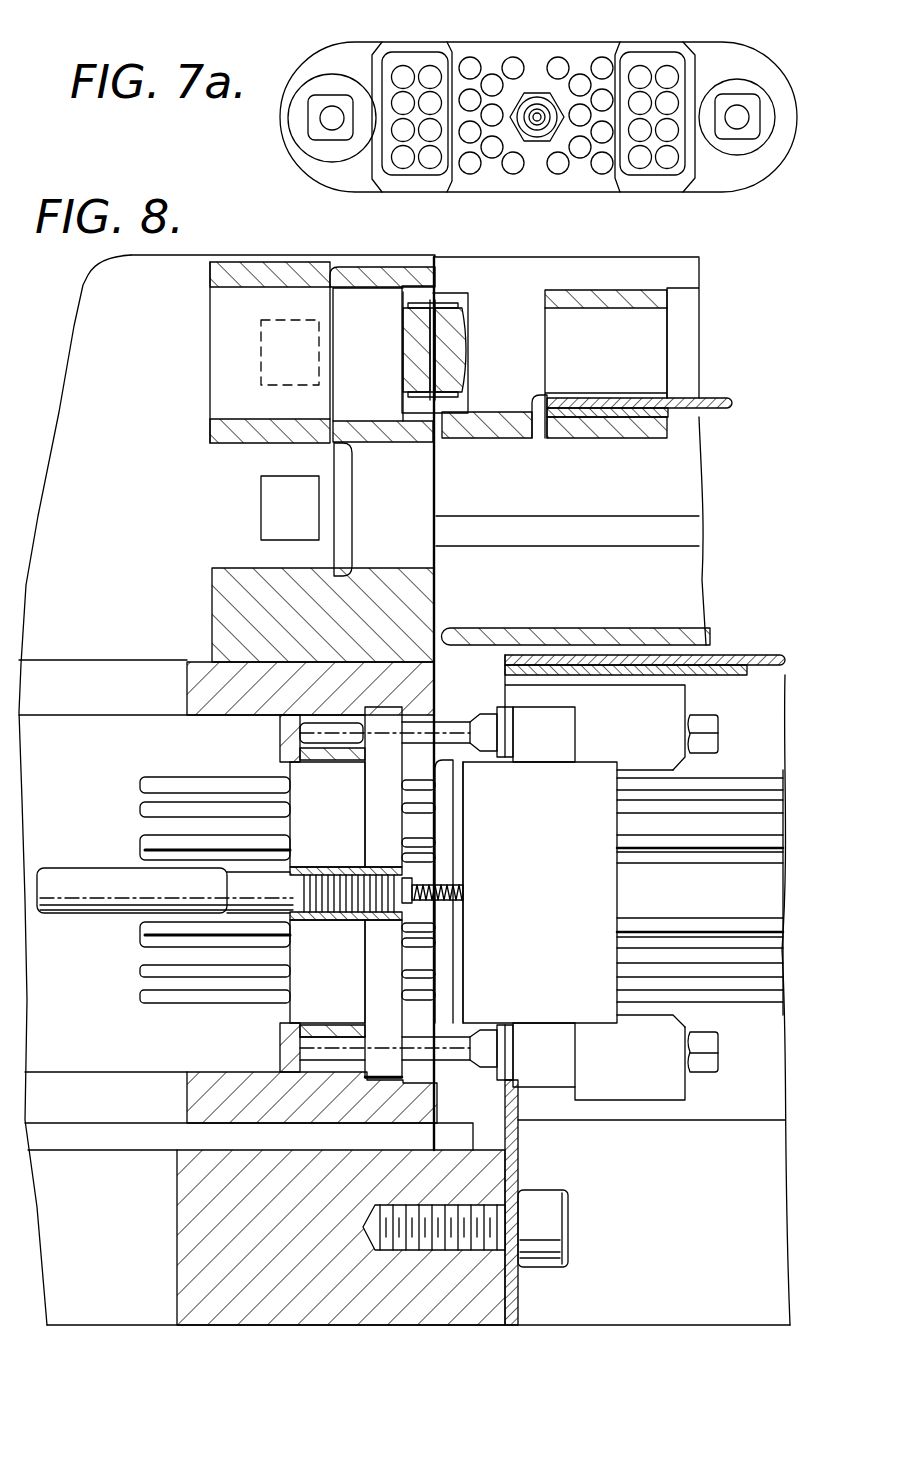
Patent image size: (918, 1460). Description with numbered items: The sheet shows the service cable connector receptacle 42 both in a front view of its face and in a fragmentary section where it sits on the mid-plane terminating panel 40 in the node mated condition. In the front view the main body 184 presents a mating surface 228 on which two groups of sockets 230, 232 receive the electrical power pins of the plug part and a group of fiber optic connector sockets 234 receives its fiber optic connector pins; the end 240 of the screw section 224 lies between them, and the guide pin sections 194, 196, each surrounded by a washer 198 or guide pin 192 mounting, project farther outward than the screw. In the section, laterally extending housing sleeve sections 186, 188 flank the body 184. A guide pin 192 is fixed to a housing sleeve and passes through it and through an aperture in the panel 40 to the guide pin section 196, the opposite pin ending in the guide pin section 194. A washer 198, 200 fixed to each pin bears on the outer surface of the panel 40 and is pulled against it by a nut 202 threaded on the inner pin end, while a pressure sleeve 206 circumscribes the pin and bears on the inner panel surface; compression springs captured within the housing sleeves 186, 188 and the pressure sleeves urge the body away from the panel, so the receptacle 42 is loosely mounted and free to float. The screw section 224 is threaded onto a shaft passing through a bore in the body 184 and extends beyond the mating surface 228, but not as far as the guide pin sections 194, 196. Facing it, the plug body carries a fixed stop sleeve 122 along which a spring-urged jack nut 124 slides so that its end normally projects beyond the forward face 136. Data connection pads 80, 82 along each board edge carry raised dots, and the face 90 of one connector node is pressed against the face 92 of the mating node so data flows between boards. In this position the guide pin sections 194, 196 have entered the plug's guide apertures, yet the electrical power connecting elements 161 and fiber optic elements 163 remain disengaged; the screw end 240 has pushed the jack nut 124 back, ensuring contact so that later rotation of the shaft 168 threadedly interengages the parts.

In FIG. 7A, the service cable connector receptacle 42 is at (365, 28).
In FIG. 8, the mid-plane terminating panel 40 is at (518, 1142).
In FIG. 8, the electrical signal data connection pad 80 is at (260, 492).
In FIG. 8, the electrical signal data connection pad 82 is at (261, 345).
In FIG. 8, the face of connector node 90 is at (417, 363).
In FIG. 8, the face of mating connector node 92 is at (452, 340).
In FIG. 8, the stop sleeve 122 is at (300, 920).
In FIG. 8, the jack nut 124 is at (247, 888).
In FIG. 8, the forward face of connector plug body 136 is at (403, 822).
In FIG. 8, the electrical power connecting elements 161 is at (437, 998).
In FIG. 8, the fiber optic elements 163 is at (435, 943).
In FIG. 8, the shaft 168 is at (93, 840).
In FIG. 7A, the main body section 184 is at (645, 45).
In FIG. 8, the main body section 184 is at (563, 839).
In FIG. 8, the housing sleeve section 186 is at (627, 1100).
In FIG. 8, the housing sleeve section 188 is at (680, 697).
In FIG. 7A, the guide pin 192 is at (752, 135).
In FIG. 8, the guide pin 192 is at (497, 767).
In FIG. 7A, the guide pin section 194 is at (325, 118).
In FIG. 8, the guide pin section 194 is at (463, 1067).
In FIG. 7A, the guide pin section 196 is at (745, 118).
In FIG. 8, the guide pin section 196 is at (450, 730).
In FIG. 7A, the washer 198 is at (302, 142).
In FIG. 8, the washer 198 is at (500, 1078).
In FIG. 8, the washer 200 is at (510, 772).
In FIG. 8, the nut 202 is at (718, 1057).
In FIG. 8, the pressure sleeve 206 is at (540, 1037).
In FIG. 7A, the screw section 224 is at (540, 185).
In FIG. 8, the screw section 224 is at (463, 893).
In FIG. 7A, the mating surface 228 is at (585, 182).
In FIG. 8, the mating surface 228 is at (460, 850).
In FIG. 7A, the group of sockets 230 is at (410, 173).
In FIG. 7A, the group of sockets 232 is at (655, 172).
In FIG. 7A, the group of fiber optic connector sockets 234 is at (495, 175).
In FIG. 7A, the end of screw section 240 is at (538, 95).
In FIG. 8, the end of screw section 240 is at (400, 862).